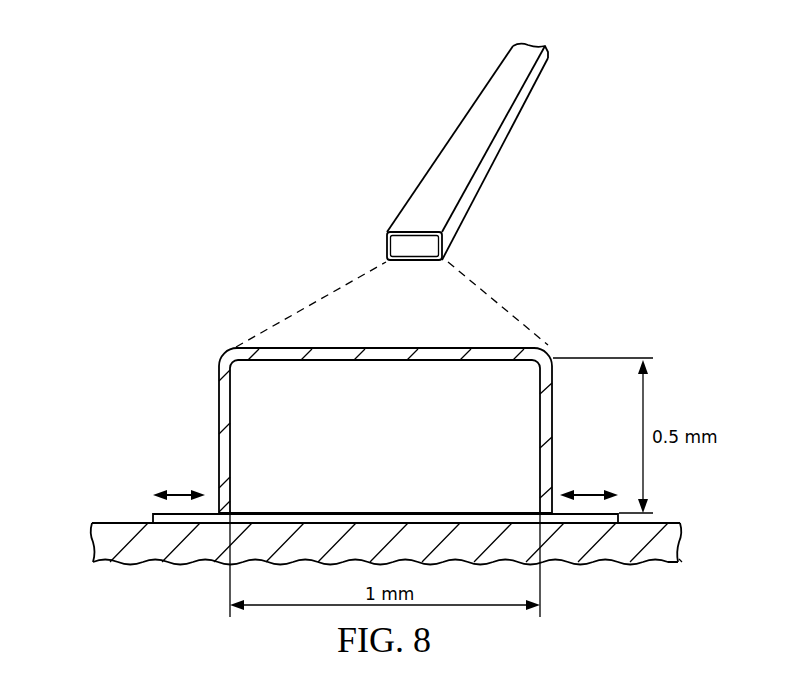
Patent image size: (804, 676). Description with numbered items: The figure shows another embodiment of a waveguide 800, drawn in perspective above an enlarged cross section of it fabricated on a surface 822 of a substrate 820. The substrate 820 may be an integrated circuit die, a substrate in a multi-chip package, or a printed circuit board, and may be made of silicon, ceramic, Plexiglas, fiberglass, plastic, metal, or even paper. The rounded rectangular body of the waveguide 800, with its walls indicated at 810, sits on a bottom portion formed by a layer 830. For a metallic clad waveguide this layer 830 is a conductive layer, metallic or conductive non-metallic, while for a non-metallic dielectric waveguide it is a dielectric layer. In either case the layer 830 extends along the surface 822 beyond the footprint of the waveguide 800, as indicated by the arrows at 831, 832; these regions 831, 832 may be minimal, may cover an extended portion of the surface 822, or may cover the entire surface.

The waveguide 800 is at (458, 140).
The housing wall 810 is at (385, 358).
The substrate 820 is at (86, 527).
The surface 822 is at (132, 522).
The conductive layer 830 is at (387, 513).
The region 831 is at (178, 492).
The region 832 is at (590, 492).